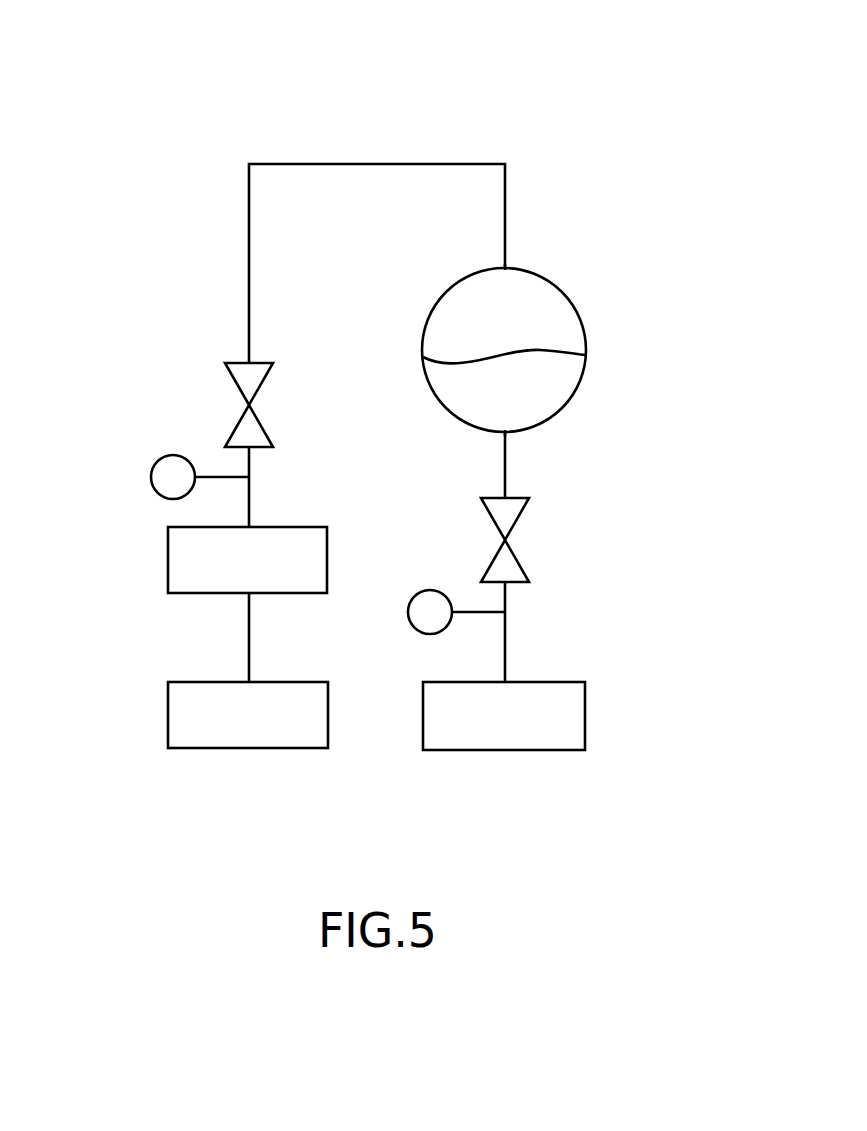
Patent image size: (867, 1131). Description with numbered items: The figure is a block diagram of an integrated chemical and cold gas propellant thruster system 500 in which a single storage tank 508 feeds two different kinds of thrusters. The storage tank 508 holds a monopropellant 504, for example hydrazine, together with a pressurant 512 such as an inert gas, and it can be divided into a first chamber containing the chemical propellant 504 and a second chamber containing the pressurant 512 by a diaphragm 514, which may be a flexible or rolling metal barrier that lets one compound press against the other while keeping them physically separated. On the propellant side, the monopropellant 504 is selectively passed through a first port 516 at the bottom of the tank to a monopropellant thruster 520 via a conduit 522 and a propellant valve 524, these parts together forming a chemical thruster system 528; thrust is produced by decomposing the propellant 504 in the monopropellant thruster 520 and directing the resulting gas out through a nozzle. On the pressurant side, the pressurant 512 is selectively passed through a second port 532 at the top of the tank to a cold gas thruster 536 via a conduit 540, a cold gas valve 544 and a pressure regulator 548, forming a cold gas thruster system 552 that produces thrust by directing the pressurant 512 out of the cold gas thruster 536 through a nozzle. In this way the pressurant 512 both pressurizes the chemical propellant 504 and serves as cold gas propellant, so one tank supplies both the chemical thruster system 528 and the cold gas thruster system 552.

The integrated chemical and cold gas propellant thruster system 500 is at (396, 98).
The monopropellant 504 is at (563, 385).
The storage tank 508 is at (435, 310).
The pressurant 512 is at (525, 292).
The diaphragm 514 is at (425, 358).
The first port 516 is at (505, 432).
The monopropellant thruster 520 is at (585, 718).
The conduit 522 is at (505, 478).
The propellant valve 524 is at (515, 515).
The chemical thruster system 528 is at (554, 779).
The second port 532 is at (505, 268).
The cold gas thruster 536 is at (168, 713).
The conduit 540 is at (281, 164).
The cold gas valve 544 is at (237, 380).
The pressure regulator 548 is at (168, 558).
The cold gas thruster system 552 is at (162, 779).